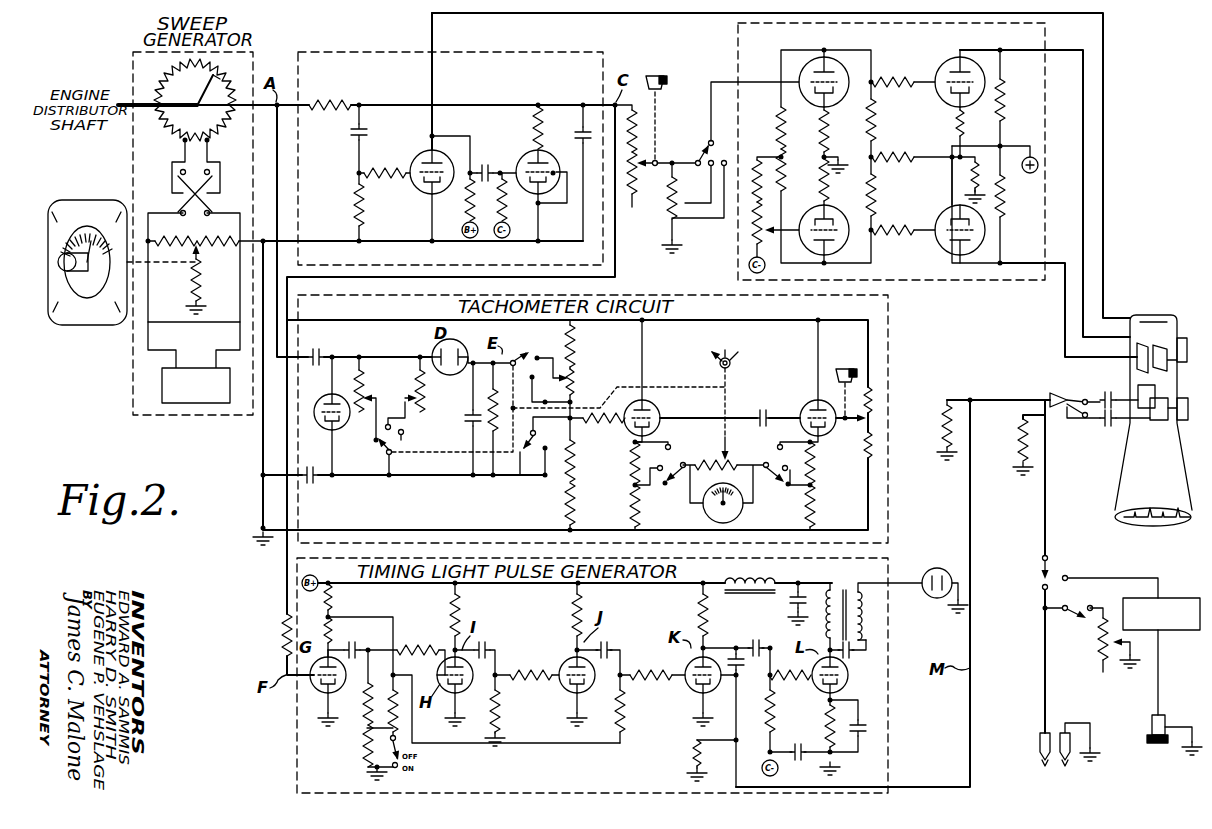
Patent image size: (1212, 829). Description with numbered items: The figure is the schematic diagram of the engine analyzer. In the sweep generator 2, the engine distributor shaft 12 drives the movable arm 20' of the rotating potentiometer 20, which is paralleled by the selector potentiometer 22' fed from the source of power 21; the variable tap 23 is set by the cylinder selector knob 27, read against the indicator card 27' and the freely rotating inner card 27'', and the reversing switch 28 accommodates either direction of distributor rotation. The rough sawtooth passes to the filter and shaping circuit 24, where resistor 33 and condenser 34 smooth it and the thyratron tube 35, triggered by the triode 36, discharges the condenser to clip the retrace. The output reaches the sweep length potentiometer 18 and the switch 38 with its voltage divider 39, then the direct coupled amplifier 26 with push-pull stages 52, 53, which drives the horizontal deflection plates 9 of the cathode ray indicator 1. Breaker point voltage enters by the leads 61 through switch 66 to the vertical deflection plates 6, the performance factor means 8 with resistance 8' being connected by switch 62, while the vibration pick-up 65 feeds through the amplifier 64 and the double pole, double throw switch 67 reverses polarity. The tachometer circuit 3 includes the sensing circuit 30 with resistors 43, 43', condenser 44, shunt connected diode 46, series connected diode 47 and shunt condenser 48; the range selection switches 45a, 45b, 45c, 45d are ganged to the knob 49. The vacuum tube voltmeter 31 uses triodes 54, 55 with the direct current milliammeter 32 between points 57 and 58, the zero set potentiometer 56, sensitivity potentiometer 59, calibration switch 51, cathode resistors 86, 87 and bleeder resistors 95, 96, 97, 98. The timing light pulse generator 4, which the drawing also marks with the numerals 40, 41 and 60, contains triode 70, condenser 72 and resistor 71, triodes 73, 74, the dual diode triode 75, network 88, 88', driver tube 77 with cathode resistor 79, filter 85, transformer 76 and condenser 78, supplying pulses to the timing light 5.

The cathode ray indicator 1 is at (1114, 487).
The sweep generator 2 is at (128, 383).
The tachometer circuit 3 is at (895, 343).
The timing light pulse generator 4 is at (290, 733).
The timing light 5 is at (925, 598).
The vertical deflection plates 6 is at (1138, 392).
The performance factor means 8 is at (1086, 652).
The resistance 8' is at (1101, 653).
The horizontal deflection plates 9 is at (1176, 381).
The engine distributor shaft 12 is at (116, 104).
The potentiometer 18 is at (644, 193).
The rotating potentiometer 20 is at (199, 108).
The movable arm 20' is at (225, 77).
The source of power 21 is at (189, 403).
The selector potentiometer 22' is at (205, 230).
The variable tap 23 is at (200, 265).
The filter and shaping circuit 24 is at (353, 51).
The direct coupled amplifier 26 is at (732, 50).
The cylinder selector knob 27 is at (87, 249).
The indicator card 27' is at (86, 227).
The inner card 27'' is at (68, 303).
The reversing switch 28 is at (170, 200).
The sensing circuit 30 is at (565, 425).
The vacuum tube voltmeter 31 is at (726, 342).
The direct current milliammeter 32 is at (706, 516).
The resistor 33 is at (340, 108).
The condenser 34 is at (548, 140).
The thyratron tube 35 is at (524, 150).
The triode 36 is at (418, 147).
The switch 38 is at (708, 142).
The voltage divider 39 is at (678, 222).
The pulse generator circuit 40 is at (575, 597).
The inductor 41 is at (750, 597).
The resistor 43 is at (373, 398).
The resistor 43' is at (429, 384).
The condenser 44 is at (322, 333).
The switch 45a is at (407, 441).
The range selection switch 45b is at (540, 338).
The range selection switch 45c is at (803, 489).
The range selection switch 45d is at (670, 482).
The shunt connected diode 46 is at (337, 436).
The series connected diode 47 is at (452, 338).
The shunt condenser 48 is at (464, 418).
The knob 49 is at (732, 357).
The tachometer calibration switch 51 is at (529, 462).
The amplifier stage 52 is at (828, 156).
The amplifier stage 53 is at (941, 156).
The triode 54 is at (658, 400).
The triode 55 is at (809, 402).
The zero set potentiometer 56 is at (866, 428).
The point 57 is at (828, 494).
The point 58 is at (632, 511).
The sensitivity potentiometer 59 is at (720, 472).
The conductor 60 is at (915, 784).
The leads 61 is at (1040, 736).
The switch 62 is at (1076, 607).
The amplifier 64 is at (1174, 598).
The vibration pick-up 65 is at (1160, 714).
The switch 66 is at (1038, 576).
The double pole, double throw switch 67 is at (1050, 388).
The triode 70 is at (332, 742).
The resistor 71 is at (318, 618).
The condenser 72 is at (368, 630).
The triode 73 is at (460, 715).
The triode 74 is at (540, 678).
The dual diode triode 75 is at (688, 697).
The transformer 76 is at (850, 563).
The driver tube 77 is at (852, 684).
The condenser 78 is at (858, 653).
The cathode resistor 79 is at (817, 724).
The filter 85 is at (790, 604).
The cathode resistor 86 is at (624, 471).
The cathode resistor 87 is at (822, 468).
The resistor-capacitor network 88 is at (698, 760).
The resistor-capacitor network 88' is at (758, 715).
The bleeder circuit resistor 95 is at (586, 346).
The potentiometer 96 is at (586, 381).
The bleeder circuit resistor 97 is at (584, 446).
The bleeder circuit resistor 98 is at (582, 498).